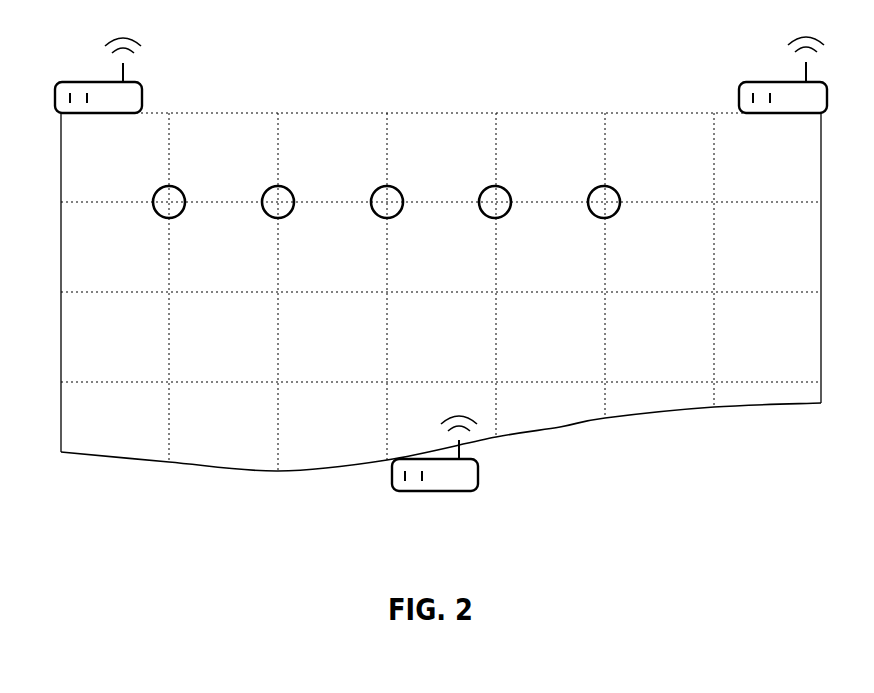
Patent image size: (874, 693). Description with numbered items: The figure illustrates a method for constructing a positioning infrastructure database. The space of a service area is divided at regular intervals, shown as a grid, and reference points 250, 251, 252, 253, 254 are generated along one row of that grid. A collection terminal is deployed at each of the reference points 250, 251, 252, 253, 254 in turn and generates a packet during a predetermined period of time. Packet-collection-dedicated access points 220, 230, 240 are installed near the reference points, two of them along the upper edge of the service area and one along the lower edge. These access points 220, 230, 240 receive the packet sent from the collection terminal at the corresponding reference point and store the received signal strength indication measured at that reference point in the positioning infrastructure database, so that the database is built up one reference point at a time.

The packet-collection-dedicated Access Point 220 is at (75, 80).
The packet-collection-dedicated Access Point 230 is at (760, 80).
The packet-collection-dedicated Access Point 240 is at (435, 492).
The reference point 250 is at (160, 188).
The reference point 251 is at (269, 188).
The reference point 252 is at (378, 188).
The reference point 253 is at (486, 188).
The reference point 254 is at (595, 188).